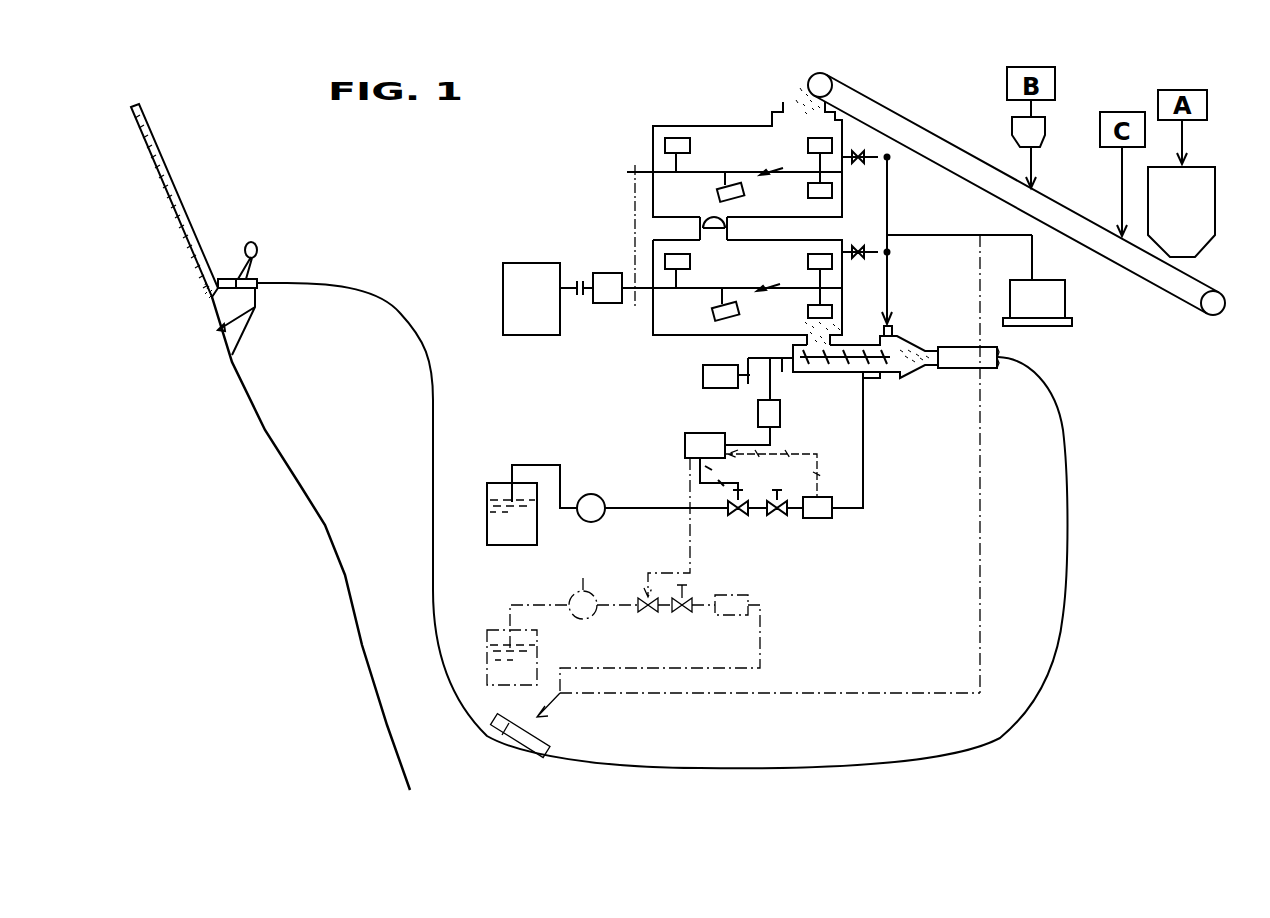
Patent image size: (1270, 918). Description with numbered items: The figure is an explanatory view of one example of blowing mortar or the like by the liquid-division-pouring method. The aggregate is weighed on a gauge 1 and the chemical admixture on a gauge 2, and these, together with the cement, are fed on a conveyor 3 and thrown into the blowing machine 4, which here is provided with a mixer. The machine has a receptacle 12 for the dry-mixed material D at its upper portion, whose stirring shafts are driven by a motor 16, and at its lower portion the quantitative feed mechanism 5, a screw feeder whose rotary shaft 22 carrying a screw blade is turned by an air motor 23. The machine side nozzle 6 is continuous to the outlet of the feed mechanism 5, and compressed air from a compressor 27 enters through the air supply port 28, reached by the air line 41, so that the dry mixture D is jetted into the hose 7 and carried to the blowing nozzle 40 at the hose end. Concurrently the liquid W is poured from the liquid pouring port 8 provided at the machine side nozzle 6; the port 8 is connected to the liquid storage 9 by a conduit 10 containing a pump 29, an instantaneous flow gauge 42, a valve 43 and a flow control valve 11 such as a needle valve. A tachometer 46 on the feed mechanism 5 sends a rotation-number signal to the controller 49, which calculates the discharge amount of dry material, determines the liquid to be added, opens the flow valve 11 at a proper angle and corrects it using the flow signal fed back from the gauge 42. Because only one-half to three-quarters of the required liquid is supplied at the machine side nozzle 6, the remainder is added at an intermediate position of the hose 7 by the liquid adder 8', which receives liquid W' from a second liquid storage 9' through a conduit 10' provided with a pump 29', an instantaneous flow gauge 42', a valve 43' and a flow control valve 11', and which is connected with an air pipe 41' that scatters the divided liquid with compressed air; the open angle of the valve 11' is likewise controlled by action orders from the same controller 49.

The gauge 1 is at (1200, 228).
The gauge 2 is at (1012, 128).
The conveyor 3 is at (1083, 214).
The blowing machine 4 is at (639, 150).
The quantitative feed mechanism 5 is at (873, 366).
The machine side nozzle 6 is at (912, 347).
The hose 7 is at (778, 766).
The liquid pouring port 8 is at (888, 397).
The liquid storage 9 is at (516, 494).
The conduit 10 is at (704, 528).
The flow control valve 11 is at (738, 531).
The receptacle 12 is at (652, 320).
The motor 16 is at (503, 270).
The rotary shaft 22 is at (782, 360).
The air motor 23 is at (703, 377).
The compressor 27 is at (1058, 300).
The air supply port 28 is at (895, 326).
The pump 29 is at (597, 486).
The blowing nozzle 40 is at (226, 278).
The signal line 41 is at (937, 422).
The instantaneous flow gauge 42 is at (833, 470).
The valve 43 is at (780, 531).
The tachometer 46 is at (758, 414).
The controller 49 is at (686, 446).
The liquid adder 8' is at (512, 734).
The liquid storage 9' is at (509, 643).
The conduit 10' is at (634, 636).
The flow control valve 11' is at (655, 556).
The second pump 29' is at (586, 577).
The air pipe 41' is at (770, 665).
The instantaneous flow gauge 42' is at (686, 630).
The valve 43' is at (692, 619).
The liquid W is at (471, 544).
The water W' is at (467, 662).
The dry-mixed material D is at (842, 328).